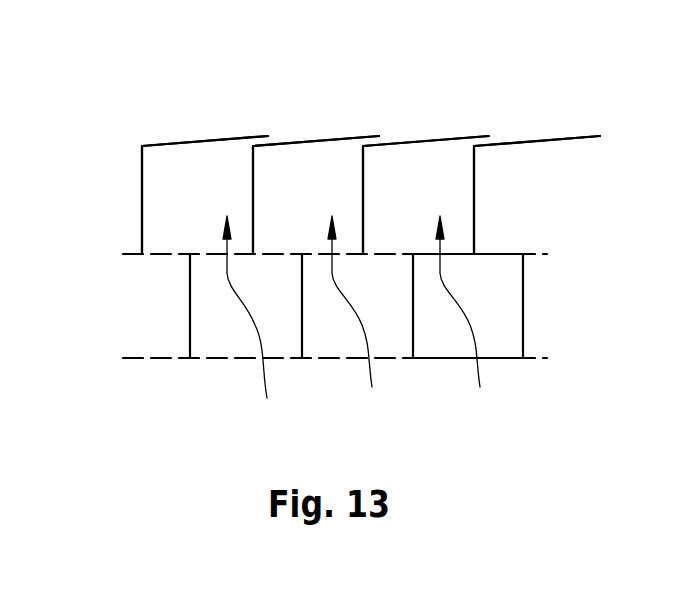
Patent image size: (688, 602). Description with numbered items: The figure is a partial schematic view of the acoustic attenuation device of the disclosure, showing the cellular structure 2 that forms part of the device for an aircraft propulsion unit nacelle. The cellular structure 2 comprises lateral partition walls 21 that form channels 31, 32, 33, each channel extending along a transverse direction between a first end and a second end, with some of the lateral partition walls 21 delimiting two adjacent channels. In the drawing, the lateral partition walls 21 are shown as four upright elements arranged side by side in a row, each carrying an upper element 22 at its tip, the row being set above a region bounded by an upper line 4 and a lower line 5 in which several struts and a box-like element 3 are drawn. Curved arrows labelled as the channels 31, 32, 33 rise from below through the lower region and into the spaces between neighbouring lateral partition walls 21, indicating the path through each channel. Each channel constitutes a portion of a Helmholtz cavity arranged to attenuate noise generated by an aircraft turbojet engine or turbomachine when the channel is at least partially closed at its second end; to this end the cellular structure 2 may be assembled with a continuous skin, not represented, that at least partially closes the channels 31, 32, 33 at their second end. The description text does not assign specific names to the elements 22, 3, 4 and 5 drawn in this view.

The cellular structure 2 is at (112, 155).
The lateral partition wall 21 is at (141, 210).
The blade tip platform 22 is at (201, 139).
The rotor struts 3 is at (143, 329).
The channel 31 is at (253, 319).
The channel 32 is at (357, 317).
The channel 33 is at (466, 317).
The upper boundary line 4 is at (502, 253).
The lower boundary line 5 is at (499, 358).